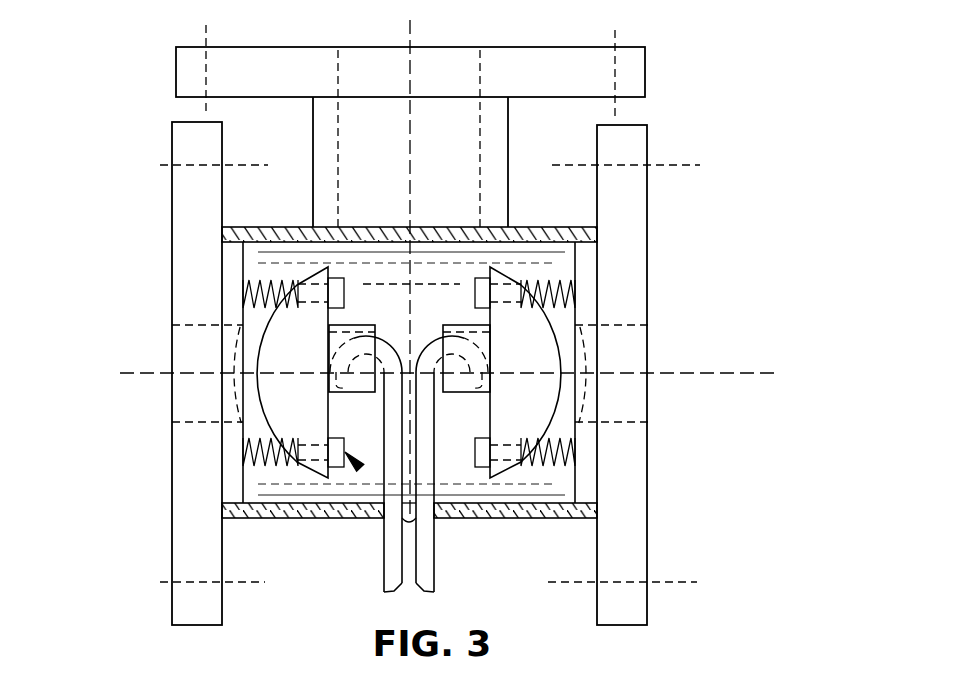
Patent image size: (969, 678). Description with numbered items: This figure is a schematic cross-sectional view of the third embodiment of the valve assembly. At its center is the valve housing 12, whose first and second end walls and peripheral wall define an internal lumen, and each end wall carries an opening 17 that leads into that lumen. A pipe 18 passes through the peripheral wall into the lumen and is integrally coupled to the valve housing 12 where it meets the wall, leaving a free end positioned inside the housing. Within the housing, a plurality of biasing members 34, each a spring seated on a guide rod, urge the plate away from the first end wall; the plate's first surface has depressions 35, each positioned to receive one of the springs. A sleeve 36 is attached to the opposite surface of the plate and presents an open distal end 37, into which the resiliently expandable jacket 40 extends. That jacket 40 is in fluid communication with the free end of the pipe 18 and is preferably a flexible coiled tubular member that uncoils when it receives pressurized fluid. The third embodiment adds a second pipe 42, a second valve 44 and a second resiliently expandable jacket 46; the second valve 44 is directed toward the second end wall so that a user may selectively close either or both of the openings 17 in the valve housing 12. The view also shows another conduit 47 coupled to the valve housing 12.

The conduit 47 is at (641, 47).
The opening 17 is at (201, 421).
The valve housing 12 is at (222, 517).
The second resiliently expandable jacket 46 is at (243, 268).
The resiliently expandable jacket 40 is at (433, 327).
The open distal end 37 is at (438, 327).
The sleeve 36 is at (460, 323).
The depression 35 is at (527, 437).
The biasing member 34 is at (548, 466).
The pipe 18 is at (424, 552).
The second pipe 42 is at (383, 548).
The second valve 44 is at (360, 468).